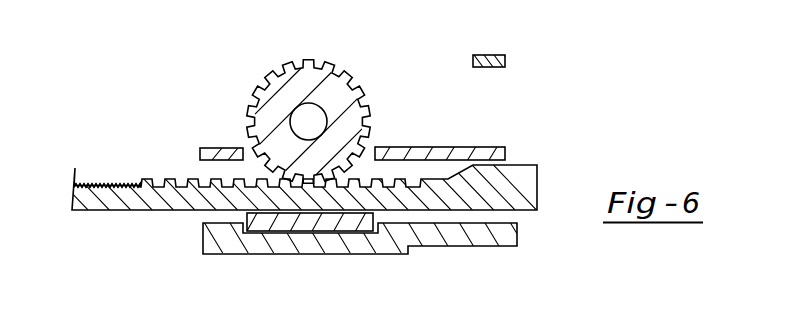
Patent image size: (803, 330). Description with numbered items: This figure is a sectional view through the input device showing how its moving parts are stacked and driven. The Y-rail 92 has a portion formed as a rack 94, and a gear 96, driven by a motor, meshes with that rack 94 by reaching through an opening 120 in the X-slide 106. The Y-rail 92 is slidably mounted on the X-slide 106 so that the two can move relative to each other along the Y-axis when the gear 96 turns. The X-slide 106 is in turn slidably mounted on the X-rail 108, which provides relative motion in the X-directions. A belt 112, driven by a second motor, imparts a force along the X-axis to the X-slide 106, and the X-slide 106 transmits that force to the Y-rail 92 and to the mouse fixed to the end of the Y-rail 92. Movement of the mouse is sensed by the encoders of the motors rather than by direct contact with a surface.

The Y-rail 92 is at (115, 176).
The rack 94 is at (167, 178).
The gear 96 is at (312, 56).
The X-slide 106 is at (219, 139).
The X-rail 108 is at (294, 241).
The belt 112 is at (487, 54).
The opening 120 is at (374, 142).